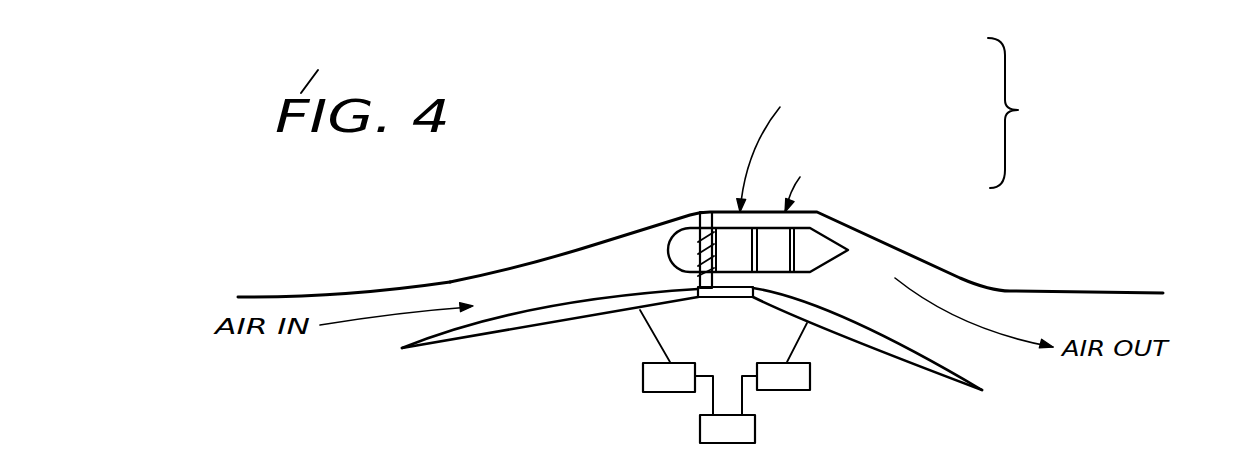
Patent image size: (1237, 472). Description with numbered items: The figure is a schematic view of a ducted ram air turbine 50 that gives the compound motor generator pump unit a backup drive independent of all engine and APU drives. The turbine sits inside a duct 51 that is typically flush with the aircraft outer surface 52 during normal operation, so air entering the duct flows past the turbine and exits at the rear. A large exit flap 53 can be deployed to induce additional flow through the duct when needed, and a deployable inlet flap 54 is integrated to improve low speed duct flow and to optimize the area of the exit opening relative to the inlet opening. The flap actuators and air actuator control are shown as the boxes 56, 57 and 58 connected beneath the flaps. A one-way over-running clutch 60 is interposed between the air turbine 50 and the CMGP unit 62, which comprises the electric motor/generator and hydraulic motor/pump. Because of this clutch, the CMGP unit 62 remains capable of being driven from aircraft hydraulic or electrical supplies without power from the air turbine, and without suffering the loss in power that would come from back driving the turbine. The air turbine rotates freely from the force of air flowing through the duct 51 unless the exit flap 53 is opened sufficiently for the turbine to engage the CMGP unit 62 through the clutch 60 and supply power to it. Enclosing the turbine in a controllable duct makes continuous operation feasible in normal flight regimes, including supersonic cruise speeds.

The ducted ram air turbine 50 is at (695, 213).
The duct 51 is at (527, 287).
The aircraft outer surface 52 is at (405, 287).
The exit flap 53 is at (912, 368).
The deployable inlet flap 54 is at (487, 338).
The flap actuator 56 is at (657, 376).
The flap actuator 57 is at (790, 385).
The air actuator control 58 is at (707, 425).
The one-way over-running clutch 60 is at (713, 212).
The CMGP unit 62 is at (1060, 125).